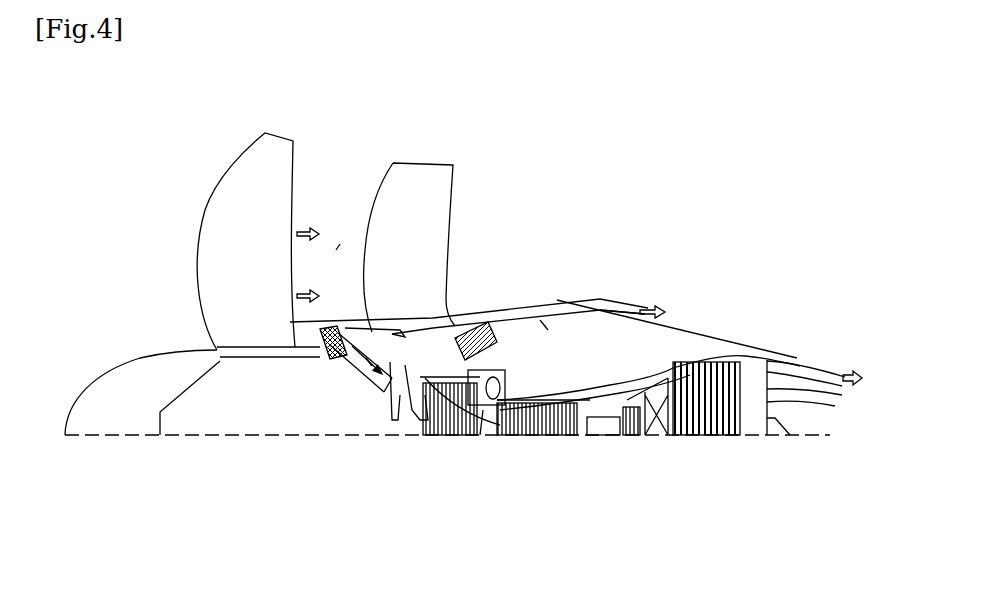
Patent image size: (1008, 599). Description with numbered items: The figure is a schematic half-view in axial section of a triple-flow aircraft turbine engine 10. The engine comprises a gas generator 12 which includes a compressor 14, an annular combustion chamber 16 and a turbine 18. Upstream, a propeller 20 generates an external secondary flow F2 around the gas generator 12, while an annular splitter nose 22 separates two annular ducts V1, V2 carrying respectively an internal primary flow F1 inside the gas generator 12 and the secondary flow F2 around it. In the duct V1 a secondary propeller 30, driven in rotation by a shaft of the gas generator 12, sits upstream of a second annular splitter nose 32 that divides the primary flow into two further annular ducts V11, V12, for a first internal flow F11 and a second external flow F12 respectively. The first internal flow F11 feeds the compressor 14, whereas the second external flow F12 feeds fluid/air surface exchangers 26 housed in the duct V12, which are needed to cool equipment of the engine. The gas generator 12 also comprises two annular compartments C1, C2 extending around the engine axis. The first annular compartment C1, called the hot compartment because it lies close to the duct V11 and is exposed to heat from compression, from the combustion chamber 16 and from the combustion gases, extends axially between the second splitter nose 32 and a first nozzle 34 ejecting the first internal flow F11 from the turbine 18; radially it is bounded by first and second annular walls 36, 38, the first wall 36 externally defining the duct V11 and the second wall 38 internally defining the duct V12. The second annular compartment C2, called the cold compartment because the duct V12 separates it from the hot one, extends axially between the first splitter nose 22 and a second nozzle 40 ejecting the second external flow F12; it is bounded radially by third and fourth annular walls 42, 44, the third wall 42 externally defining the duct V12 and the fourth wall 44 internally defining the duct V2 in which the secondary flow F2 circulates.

The turbine engine 10 is at (308, 500).
The gas generator 12 is at (742, 448).
The compressor 14 is at (548, 435).
The annular combustion chamber 16 is at (615, 408).
The turbine 18 is at (698, 435).
The propeller 20 is at (203, 258).
The annular splitter nose 22 is at (318, 352).
The fluid/air surface exchangers 26 is at (473, 336).
The secondary propeller 30 is at (325, 340).
The second annular splitter nose 32 is at (376, 331).
The first nozzle 34 is at (803, 364).
The first annular wall 36 is at (668, 430).
The second annular wall 38 is at (625, 305).
The second nozzle 40 is at (645, 308).
The third annular wall 42 is at (528, 435).
The fourth annular wall 44 is at (515, 320).
The internal primary flow F1 is at (340, 365).
The external secondary flow F2 is at (305, 292).
The first internal flow F11 is at (858, 372).
The second external flow F12 is at (658, 304).
The annular duct V1 is at (370, 362).
The annular duct V2 is at (340, 244).
The annular duct V11 is at (480, 435).
The annular duct V12 is at (547, 310).
The first annular compartment C1 is at (640, 357).
The second annular compartment C2 is at (445, 337).